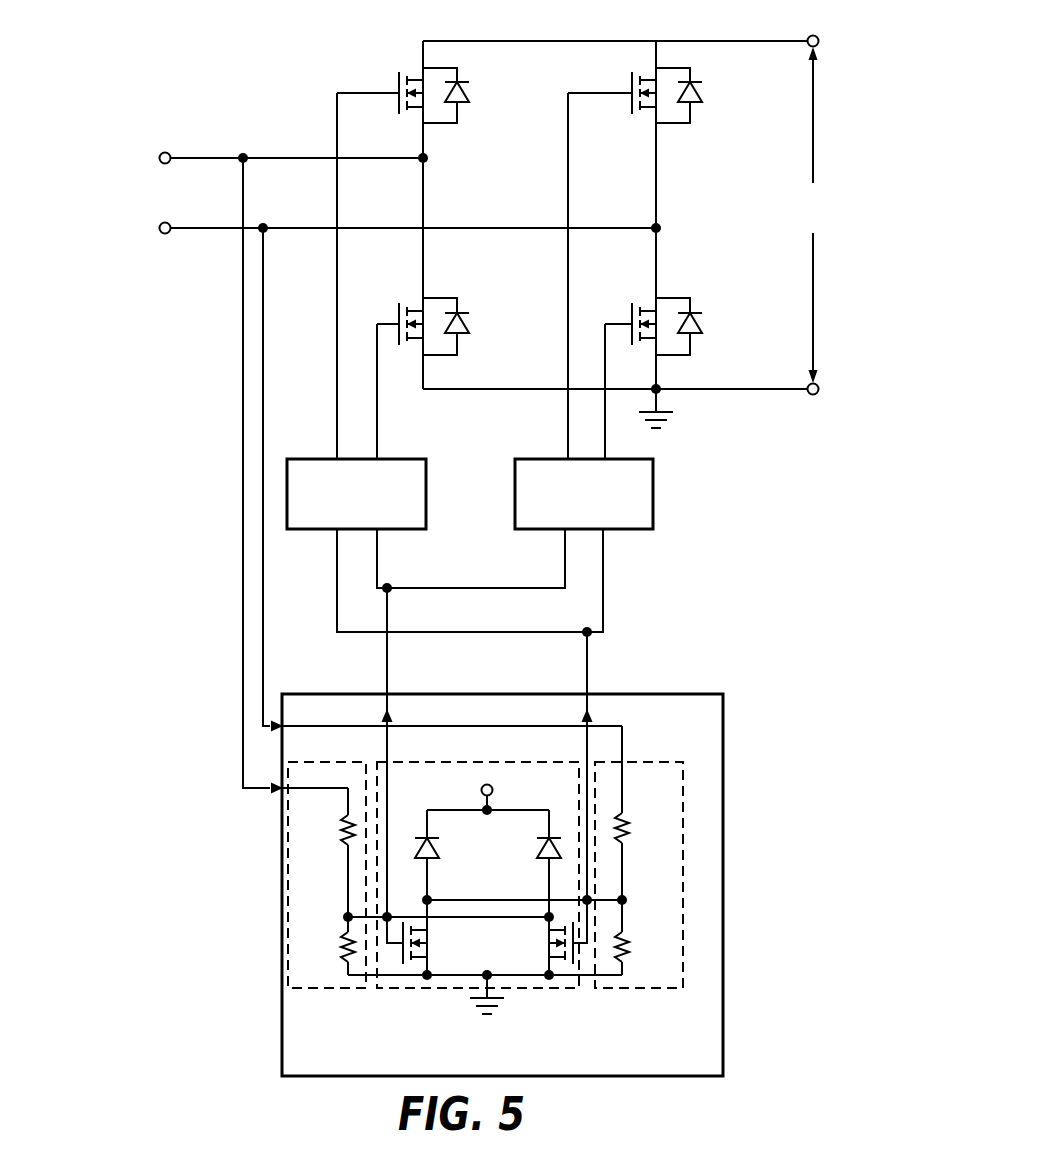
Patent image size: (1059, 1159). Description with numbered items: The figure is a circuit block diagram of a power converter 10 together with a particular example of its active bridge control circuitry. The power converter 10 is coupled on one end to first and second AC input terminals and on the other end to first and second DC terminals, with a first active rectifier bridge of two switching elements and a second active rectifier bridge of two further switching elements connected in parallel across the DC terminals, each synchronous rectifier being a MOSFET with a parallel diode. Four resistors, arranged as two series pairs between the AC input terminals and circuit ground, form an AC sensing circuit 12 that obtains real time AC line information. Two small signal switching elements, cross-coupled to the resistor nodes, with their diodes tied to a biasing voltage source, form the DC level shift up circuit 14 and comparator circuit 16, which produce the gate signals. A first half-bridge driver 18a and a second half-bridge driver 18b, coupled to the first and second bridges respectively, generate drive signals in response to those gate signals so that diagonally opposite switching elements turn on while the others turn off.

The power converter 10 is at (188, 64).
The AC sensing circuit 12 is at (308, 990).
The DC level shift up circuit 14 is at (507, 903).
The comparator circuit 16 is at (528, 990).
The first half-bridge driver 18a is at (426, 493).
The second half-bridge driver 18b is at (653, 493).